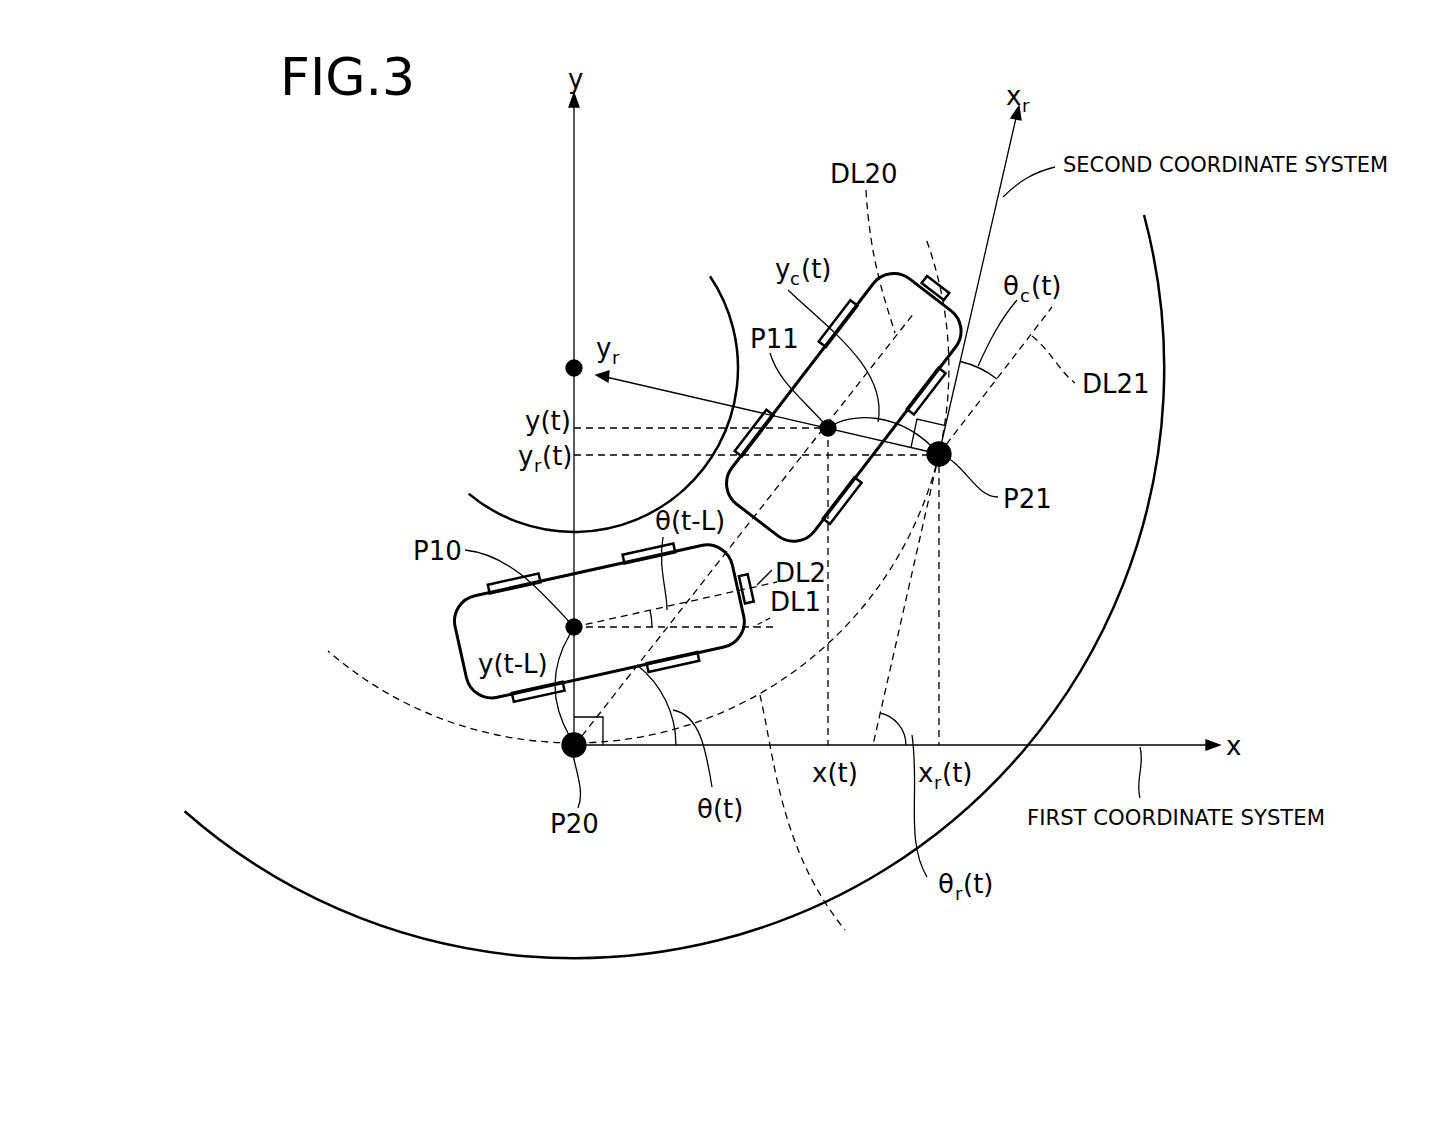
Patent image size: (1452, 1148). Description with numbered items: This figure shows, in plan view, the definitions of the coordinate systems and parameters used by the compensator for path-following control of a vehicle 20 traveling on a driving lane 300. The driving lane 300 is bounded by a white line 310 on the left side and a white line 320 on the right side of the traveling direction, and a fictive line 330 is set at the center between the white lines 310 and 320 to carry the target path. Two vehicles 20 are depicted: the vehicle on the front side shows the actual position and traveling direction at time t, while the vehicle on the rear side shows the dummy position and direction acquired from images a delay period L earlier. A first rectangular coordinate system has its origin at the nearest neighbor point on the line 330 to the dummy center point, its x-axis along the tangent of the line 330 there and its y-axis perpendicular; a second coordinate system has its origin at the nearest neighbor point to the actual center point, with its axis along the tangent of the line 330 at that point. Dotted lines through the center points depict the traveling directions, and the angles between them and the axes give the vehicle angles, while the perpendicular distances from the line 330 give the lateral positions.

The vehicle 20 is at (908, 263).
The driving lane 300 is at (1127, 475).
The white line 310 is at (737, 353).
The white line 320 is at (1140, 532).
The line 330 is at (829, 822).